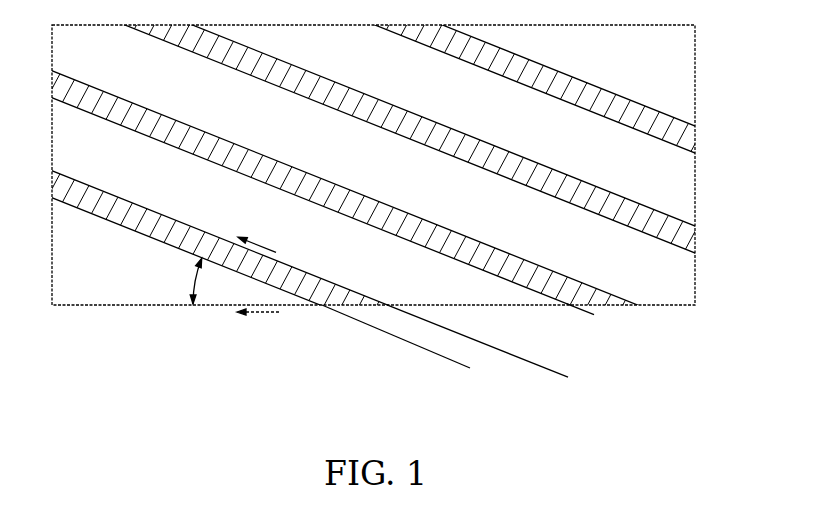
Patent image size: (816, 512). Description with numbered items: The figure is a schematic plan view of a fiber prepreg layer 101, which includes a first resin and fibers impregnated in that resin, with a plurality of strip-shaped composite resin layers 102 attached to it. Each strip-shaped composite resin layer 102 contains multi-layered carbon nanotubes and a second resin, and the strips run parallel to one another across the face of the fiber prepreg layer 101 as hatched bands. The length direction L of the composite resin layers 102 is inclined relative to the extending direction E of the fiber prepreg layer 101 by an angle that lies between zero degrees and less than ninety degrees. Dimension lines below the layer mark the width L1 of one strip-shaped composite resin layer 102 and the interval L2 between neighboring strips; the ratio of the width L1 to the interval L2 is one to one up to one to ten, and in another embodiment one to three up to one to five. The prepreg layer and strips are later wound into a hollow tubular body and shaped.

The fiber prepreg layer 101 is at (682, 190).
The strip-shaped composite resin layer 102 is at (682, 237).
The width of the strip-shaped composite resin layer L1 is at (484, 311).
The interval of the strip-shaped composite resin layers L2 is at (583, 307).
The length direction of the composite resin layers L is at (257, 237).
The extending direction of the fiber prepreg layer E is at (258, 324).